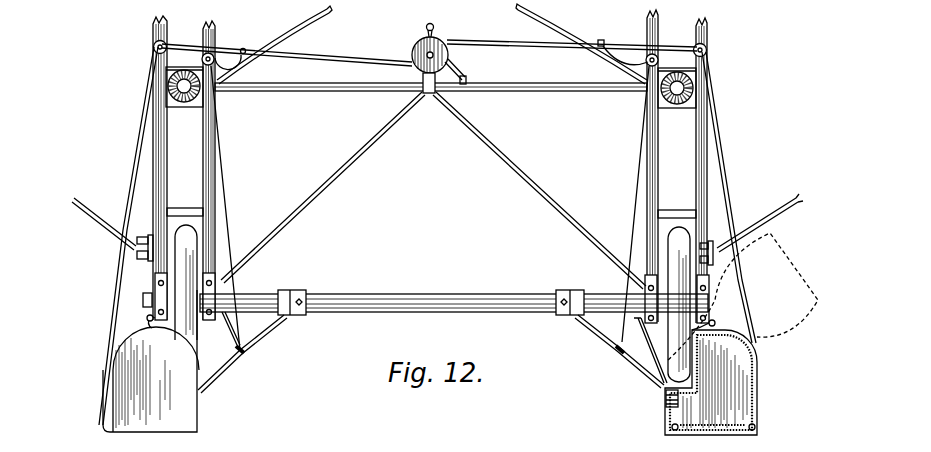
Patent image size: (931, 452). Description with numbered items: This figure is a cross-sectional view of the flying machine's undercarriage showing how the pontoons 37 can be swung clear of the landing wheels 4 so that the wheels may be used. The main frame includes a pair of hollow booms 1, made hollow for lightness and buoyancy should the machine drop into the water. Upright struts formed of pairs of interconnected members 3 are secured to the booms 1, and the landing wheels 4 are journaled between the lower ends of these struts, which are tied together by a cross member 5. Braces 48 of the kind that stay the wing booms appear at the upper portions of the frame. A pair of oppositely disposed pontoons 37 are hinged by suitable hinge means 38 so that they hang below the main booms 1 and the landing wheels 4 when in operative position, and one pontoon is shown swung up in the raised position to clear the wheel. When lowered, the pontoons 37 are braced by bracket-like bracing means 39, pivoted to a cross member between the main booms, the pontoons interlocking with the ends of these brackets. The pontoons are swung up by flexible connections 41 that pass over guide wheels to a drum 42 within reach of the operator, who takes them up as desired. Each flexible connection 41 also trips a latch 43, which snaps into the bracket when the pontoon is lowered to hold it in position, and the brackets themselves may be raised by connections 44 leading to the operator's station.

The boom 1 is at (170, 89).
The upright strut member 3 is at (160, 148).
The landing wheel 4 is at (183, 240).
The cross member 5 is at (382, 295).
The pontoon 37 is at (183, 412).
The hinge means 38 is at (147, 318).
The bracing means 39 is at (237, 356).
The flexible connection 41 is at (122, 266).
The drum 42 is at (412, 52).
The latch 43 is at (666, 400).
The connection 44 is at (222, 218).
The brace 48 is at (437, 219).